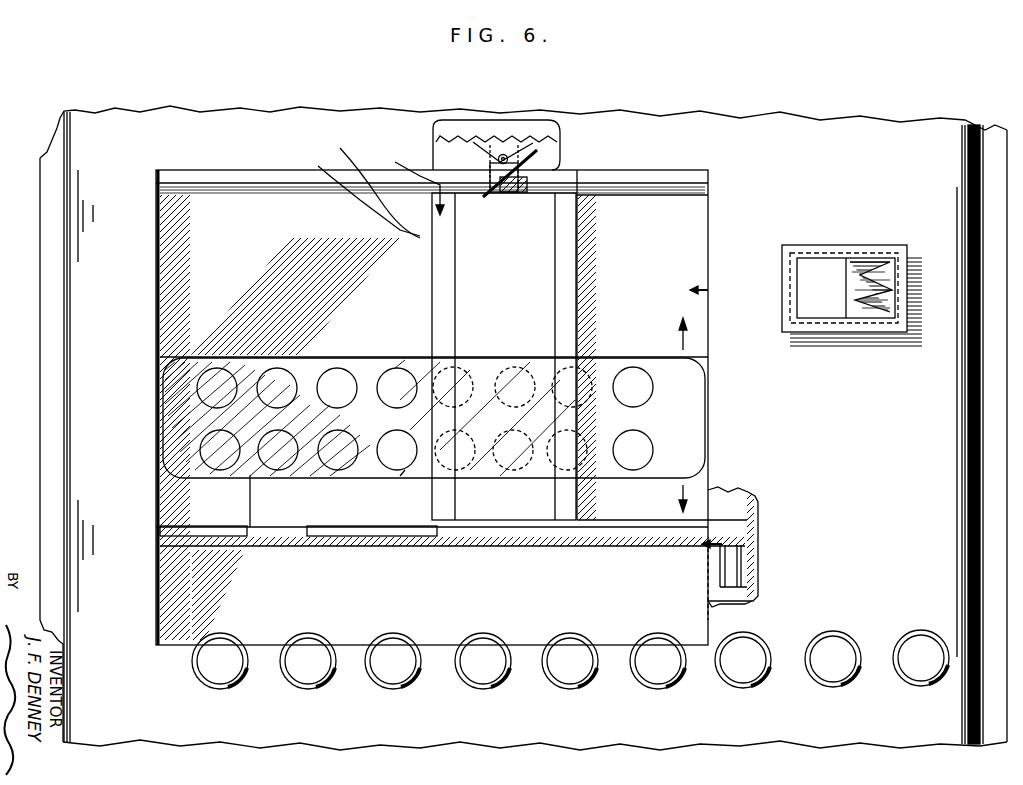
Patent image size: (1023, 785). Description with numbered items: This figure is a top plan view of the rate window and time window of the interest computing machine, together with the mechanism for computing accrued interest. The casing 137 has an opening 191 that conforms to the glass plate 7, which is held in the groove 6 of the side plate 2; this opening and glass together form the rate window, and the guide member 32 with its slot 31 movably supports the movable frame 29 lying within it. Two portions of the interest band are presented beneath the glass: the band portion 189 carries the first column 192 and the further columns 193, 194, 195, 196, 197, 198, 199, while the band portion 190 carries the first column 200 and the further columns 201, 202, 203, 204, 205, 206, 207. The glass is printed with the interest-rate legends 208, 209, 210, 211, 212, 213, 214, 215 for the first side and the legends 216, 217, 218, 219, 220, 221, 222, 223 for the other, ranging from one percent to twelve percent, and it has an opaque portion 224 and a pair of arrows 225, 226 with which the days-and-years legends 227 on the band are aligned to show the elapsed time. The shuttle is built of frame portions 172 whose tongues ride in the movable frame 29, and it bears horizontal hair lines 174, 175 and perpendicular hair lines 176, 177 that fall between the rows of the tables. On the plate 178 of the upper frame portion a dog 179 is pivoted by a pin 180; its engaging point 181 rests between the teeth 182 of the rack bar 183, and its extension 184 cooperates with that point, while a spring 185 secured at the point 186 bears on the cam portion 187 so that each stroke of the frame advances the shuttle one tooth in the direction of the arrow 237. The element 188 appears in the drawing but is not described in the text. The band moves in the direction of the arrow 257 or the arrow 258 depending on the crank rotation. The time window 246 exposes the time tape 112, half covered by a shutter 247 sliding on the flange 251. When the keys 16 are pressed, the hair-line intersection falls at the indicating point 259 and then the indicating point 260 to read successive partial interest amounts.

The side plate 2 is at (722, 557).
The groove 6 is at (728, 605).
The glass plate 7 is at (156, 300).
The keys 16 is at (244, 685).
The movable frame 29 is at (672, 170).
The slot 31 is at (740, 576).
The guide member 32 is at (745, 538).
The time tape 112 is at (800, 284).
The casing 137 is at (795, 124).
The frame portions 172 is at (568, 176).
The horizontal hair line 174 is at (548, 232).
The horizontal hair line 175 is at (484, 476).
The perpendicular hair line 176 is at (552, 414).
The perpendicular hair line 177 is at (458, 412).
The plate 178 is at (478, 158).
The dog 179 is at (498, 150).
The pin or rivet 180 is at (504, 150).
The engaging point 181 is at (518, 150).
The teeth 182 is at (410, 136).
The rack bar 183 is at (434, 126).
The extension 184 is at (433, 148).
The spring 185 is at (542, 160).
The securing point 186 is at (528, 184).
The cam portion 187 is at (548, 166).
The column 188 is at (500, 182).
The band portion 189 is at (692, 240).
The band portion 190 is at (730, 494).
The opening 191 is at (708, 204).
The column of figures 192 is at (214, 234).
The column of figures 193 is at (270, 234).
The column of figures 194 is at (315, 234).
The column of figures 195 is at (357, 195).
The column of figures 196 is at (369, 187).
The column of figures 197 is at (523, 234).
The column of figures 198 is at (590, 236).
The column of figures 199 is at (658, 234).
The column of figures 200 is at (226, 608).
The column of figures 201 is at (276, 610).
The column of figures 202 is at (340, 610).
The column of figures 203 is at (404, 610).
The column of figures 204 is at (456, 610).
The column of figures 205 is at (514, 610).
The column of figures 206 is at (576, 610).
The column of figures 207 is at (634, 610).
The rate of interest legend 208 is at (230, 406).
The rate of interest legend 209 is at (286, 374).
The rate of interest legend 210 is at (330, 414).
The rate of interest legend 211 is at (355, 370).
The rate of interest legend 212 is at (414, 380).
The rate of interest legend 213 is at (470, 378).
The rate of interest legend 214 is at (588, 402).
The rate of interest legend 215 is at (644, 398).
The rate of interest legend 216 is at (240, 436).
The rate of interest legend 217 is at (280, 434).
The rate of interest legend 218 is at (290, 476).
The rate of interest legend 219 is at (416, 473).
The rate of interest legend 220 is at (408, 436).
The rate of interest legend 221 is at (468, 438).
The rate of interest legend 222 is at (640, 430).
The rate of interest legend 223 is at (650, 452).
The opaque portion 224 is at (700, 356).
The arrow 225 is at (690, 290).
The arrow 226 is at (708, 558).
The figures representing days and years 227 is at (690, 268).
The arrow 237 is at (408, 182).
The time window 246 is at (806, 258).
The shutter 247 is at (876, 268).
The flange 251 is at (900, 262).
The arrow 257 is at (695, 326).
The arrow 258 is at (698, 503).
The indicating point 259 is at (244, 478).
The indicating point 260 is at (160, 527).